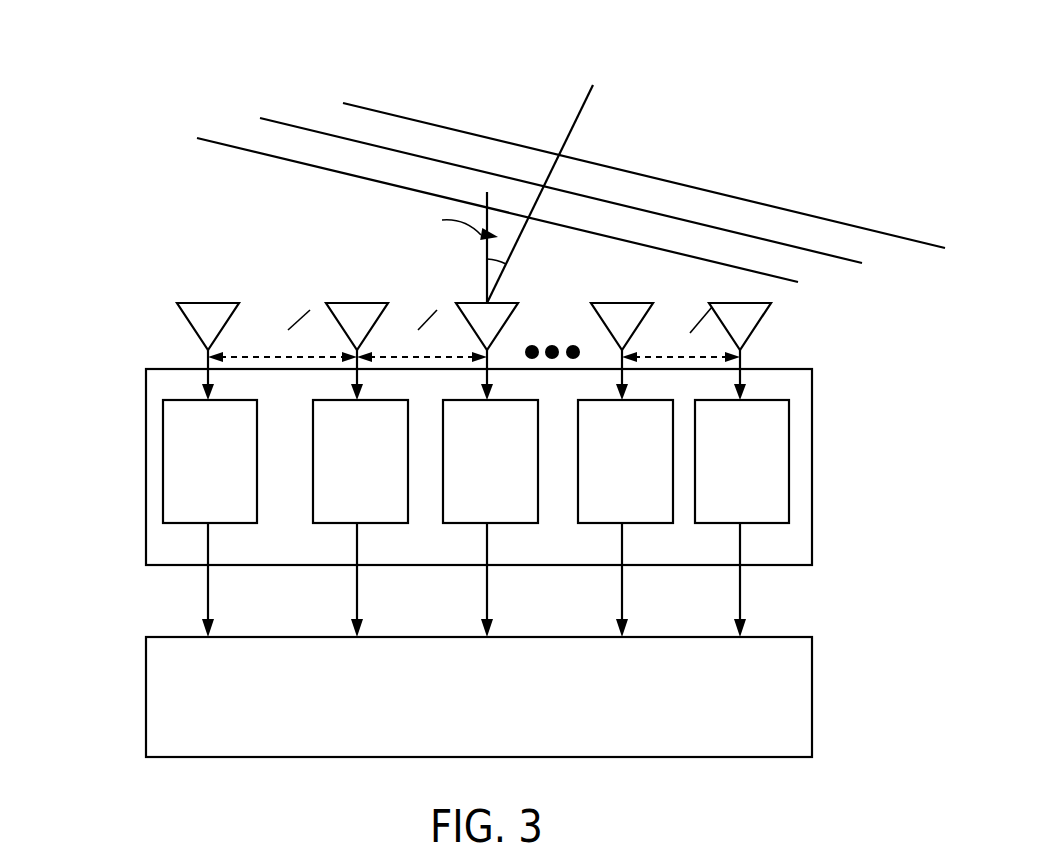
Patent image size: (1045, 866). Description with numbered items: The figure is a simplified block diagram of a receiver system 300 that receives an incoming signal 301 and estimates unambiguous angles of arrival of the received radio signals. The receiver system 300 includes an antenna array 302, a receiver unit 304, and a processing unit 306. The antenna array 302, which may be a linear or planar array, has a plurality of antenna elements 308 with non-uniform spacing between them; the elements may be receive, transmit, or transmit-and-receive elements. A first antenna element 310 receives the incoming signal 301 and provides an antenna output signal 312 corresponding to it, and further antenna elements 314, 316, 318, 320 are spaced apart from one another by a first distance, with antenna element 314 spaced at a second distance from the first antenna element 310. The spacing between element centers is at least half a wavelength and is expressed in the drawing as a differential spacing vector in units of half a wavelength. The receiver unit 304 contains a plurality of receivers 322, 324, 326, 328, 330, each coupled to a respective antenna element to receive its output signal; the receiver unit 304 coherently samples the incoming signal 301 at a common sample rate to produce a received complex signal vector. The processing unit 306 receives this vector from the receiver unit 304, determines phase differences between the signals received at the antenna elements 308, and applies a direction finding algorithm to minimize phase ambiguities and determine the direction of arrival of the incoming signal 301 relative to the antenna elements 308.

The receiver system 300 is at (158, 267).
The incoming signal 301 is at (373, 100).
The antenna array 302 is at (102, 333).
The receiver unit 304 is at (813, 434).
The processing unit 306 is at (812, 698).
The antenna elements 308 is at (770, 329).
The first antenna element 310 is at (212, 313).
The antenna output signal 312 is at (204, 352).
The antenna element 314 is at (360, 313).
The antenna element 316 is at (470, 300).
The antenna element 318 is at (626, 313).
The antenna element 320 is at (747, 305).
The receiver 322 is at (180, 524).
The receiver 324 is at (330, 524).
The receiver 326 is at (460, 524).
The receiver 328 is at (593, 524).
The receiver 330 is at (789, 496).